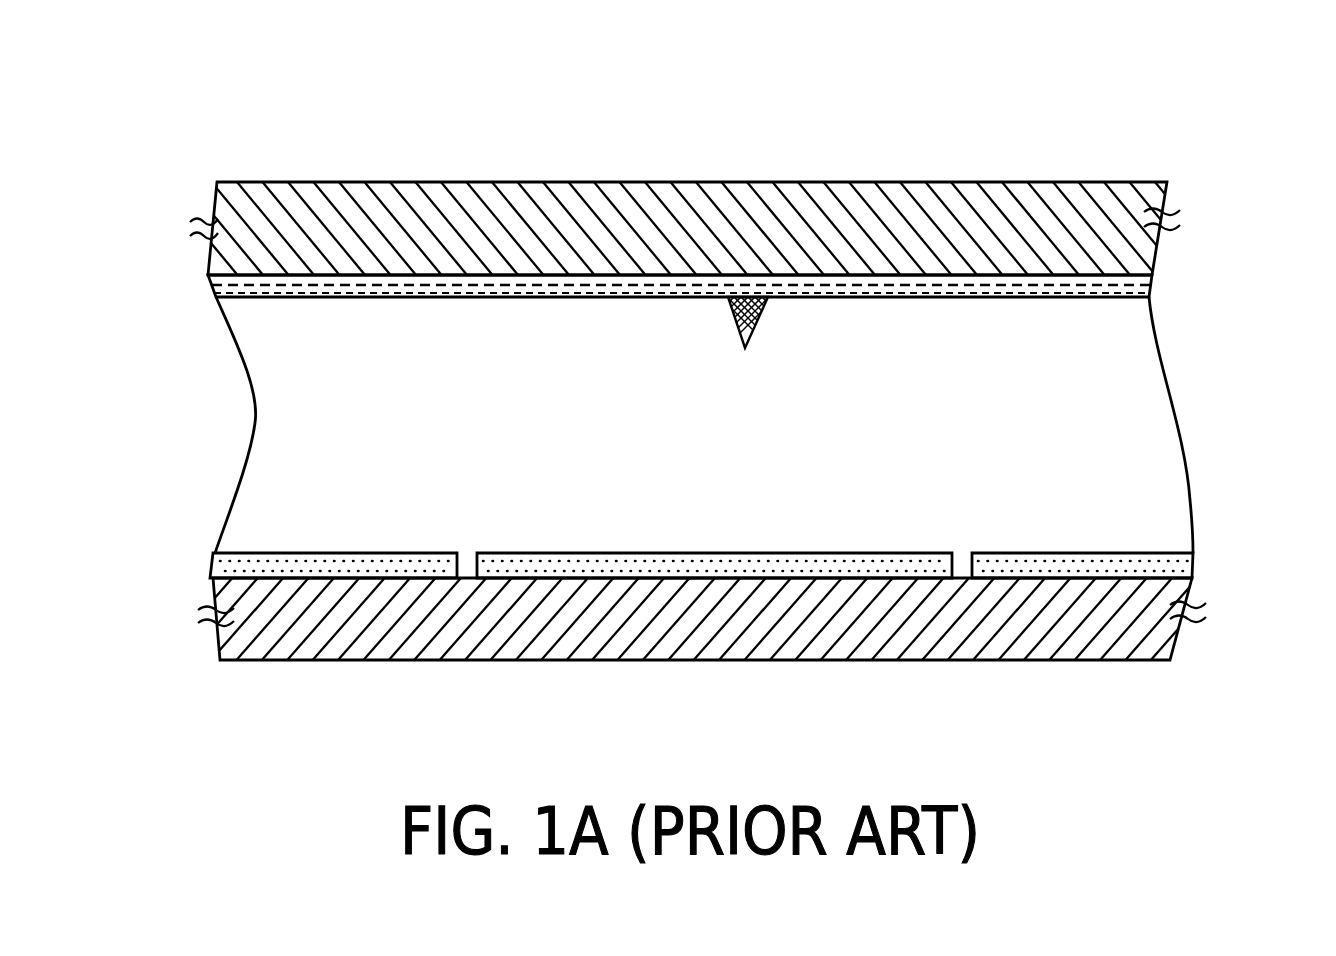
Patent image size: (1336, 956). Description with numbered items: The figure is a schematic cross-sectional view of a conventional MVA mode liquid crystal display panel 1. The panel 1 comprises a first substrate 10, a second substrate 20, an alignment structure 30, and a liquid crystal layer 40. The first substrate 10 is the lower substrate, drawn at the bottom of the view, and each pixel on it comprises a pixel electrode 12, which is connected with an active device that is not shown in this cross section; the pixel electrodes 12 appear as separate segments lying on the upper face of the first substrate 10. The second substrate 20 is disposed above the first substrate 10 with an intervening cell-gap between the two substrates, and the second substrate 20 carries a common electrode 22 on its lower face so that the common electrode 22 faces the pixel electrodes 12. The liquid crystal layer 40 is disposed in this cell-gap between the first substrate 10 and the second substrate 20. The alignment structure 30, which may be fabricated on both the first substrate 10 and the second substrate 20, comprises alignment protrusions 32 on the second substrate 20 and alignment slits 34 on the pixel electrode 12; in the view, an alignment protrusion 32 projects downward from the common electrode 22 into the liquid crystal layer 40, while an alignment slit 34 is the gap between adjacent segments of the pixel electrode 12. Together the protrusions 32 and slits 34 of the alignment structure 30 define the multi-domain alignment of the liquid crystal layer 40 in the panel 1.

The MVA mode liquid crystal display panel 1 is at (1270, 790).
The first substrate 10 is at (1158, 638).
The pixel electrode 12 is at (1175, 567).
The second substrate 20 is at (1147, 250).
The common electrode 22 is at (1140, 289).
The alignment structure 30 is at (828, 277).
The alignment protrusions 32 is at (750, 297).
The alignment slits 34 is at (956, 550).
The liquid crystal layer 40 is at (1150, 447).